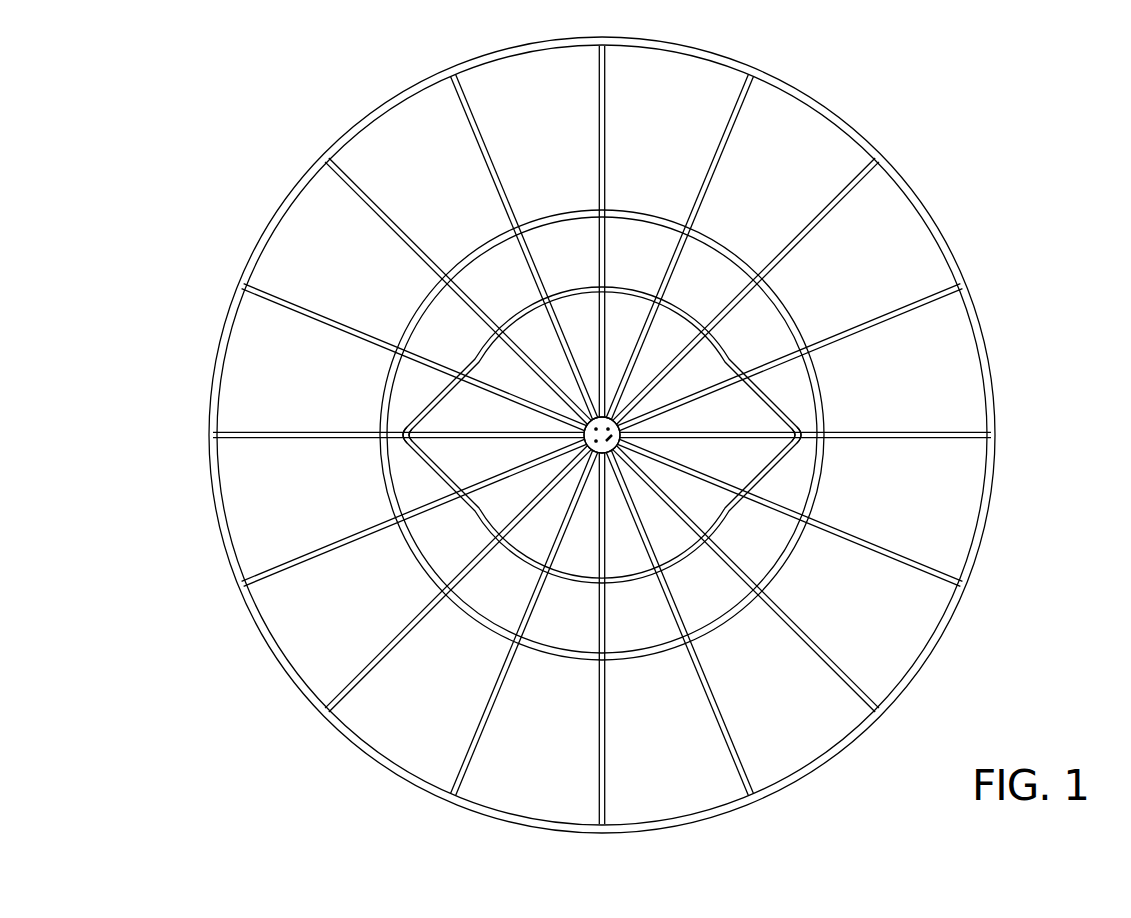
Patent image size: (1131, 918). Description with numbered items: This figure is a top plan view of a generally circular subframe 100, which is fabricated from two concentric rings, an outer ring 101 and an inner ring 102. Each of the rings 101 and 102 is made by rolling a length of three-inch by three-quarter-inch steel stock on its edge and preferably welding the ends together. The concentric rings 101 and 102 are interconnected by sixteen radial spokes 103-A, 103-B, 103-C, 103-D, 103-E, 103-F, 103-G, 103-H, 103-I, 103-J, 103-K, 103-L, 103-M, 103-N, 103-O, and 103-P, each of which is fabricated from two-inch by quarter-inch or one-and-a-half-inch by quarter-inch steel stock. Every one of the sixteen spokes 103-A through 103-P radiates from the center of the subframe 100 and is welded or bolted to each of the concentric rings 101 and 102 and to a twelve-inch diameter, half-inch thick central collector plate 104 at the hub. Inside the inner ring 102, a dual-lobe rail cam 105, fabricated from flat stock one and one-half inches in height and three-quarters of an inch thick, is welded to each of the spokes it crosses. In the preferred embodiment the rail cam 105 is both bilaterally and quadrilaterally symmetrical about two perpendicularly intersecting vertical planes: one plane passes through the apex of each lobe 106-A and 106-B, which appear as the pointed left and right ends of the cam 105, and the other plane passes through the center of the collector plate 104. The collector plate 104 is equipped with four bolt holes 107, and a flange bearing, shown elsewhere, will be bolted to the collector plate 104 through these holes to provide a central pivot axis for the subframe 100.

The subframe 100 is at (579, 435).
The outer concentric ring 101 is at (214, 374).
The inner concentric ring 102 is at (384, 392).
The radial spoke 103-A is at (606, 122).
The radial spoke 103-B is at (721, 150).
The radial spoke 103-C is at (817, 221).
The radial spoke 103-D is at (870, 322).
The radial spoke 103-E is at (890, 440).
The radial spoke 103-F is at (877, 548).
The radial spoke 103-G is at (817, 645).
The radial spoke 103-H is at (721, 715).
The radial spoke 103-I is at (598, 752).
The radial spoke 103-J is at (485, 718).
The radial spoke 103-K is at (389, 650).
The radial spoke 103-L is at (329, 549).
The radial spoke 103-M is at (316, 441).
The radial spoke 103-N is at (336, 323).
The radial spoke 103-O is at (389, 222).
The radial spoke 103-P is at (484, 150).
The central collector plate 104 is at (546, 426).
The dual-lobe rail cam 105 is at (668, 560).
The lobe 106-A is at (408, 441).
The lobe 106-B is at (794, 446).
The bolt holes 107 is at (622, 433).